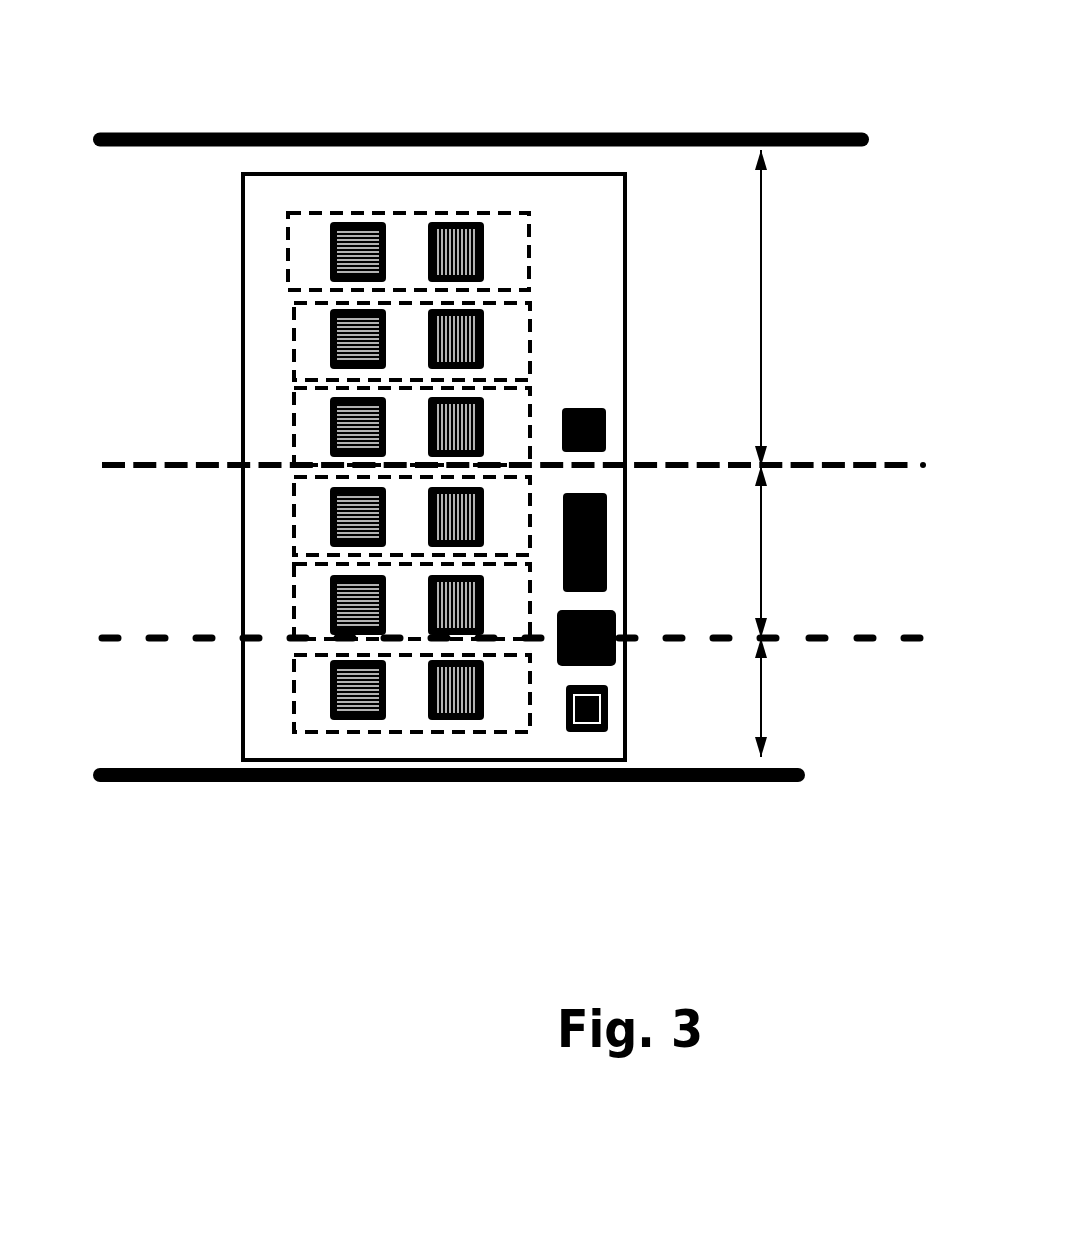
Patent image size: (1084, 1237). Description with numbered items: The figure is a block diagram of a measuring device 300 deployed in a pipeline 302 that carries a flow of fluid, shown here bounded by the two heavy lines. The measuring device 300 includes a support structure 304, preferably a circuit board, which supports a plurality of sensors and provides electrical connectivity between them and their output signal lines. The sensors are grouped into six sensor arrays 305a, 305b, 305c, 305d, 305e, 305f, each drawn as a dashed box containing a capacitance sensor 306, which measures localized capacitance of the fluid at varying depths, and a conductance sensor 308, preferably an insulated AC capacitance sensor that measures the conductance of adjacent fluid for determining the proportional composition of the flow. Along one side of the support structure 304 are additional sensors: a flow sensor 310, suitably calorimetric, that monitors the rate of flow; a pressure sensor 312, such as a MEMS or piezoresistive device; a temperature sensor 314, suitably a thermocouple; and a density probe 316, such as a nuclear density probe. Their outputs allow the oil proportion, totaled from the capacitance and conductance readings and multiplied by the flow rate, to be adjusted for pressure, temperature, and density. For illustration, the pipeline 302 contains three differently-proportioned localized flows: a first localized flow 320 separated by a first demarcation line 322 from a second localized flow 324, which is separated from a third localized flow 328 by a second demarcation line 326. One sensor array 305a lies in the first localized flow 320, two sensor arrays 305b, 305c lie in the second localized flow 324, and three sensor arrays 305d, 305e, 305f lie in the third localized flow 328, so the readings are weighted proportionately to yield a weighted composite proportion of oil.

The measuring device 300 is at (298, 746).
The pipeline 302 is at (415, 120).
The support structure 304 is at (633, 186).
The sensor array 305a is at (343, 749).
The sensor array 305b is at (286, 593).
The sensor array 305c is at (286, 508).
The sensor array 305d is at (284, 424).
The sensor array 305e is at (286, 337).
The sensor array 305f is at (290, 247).
The capacitance sensor 306 is at (357, 720).
The conductance sensor 308 is at (453, 720).
The flow sensor 310 is at (616, 622).
The pressure sensor 312 is at (608, 695).
The temperature sensor 314 is at (607, 542).
The density probe 316 is at (607, 416).
The first localized flow 320 is at (765, 705).
The first demarcation line 322 is at (878, 628).
The second localized flow 324 is at (765, 570).
The second demarcation line 326 is at (886, 455).
The third localized flow 328 is at (765, 333).